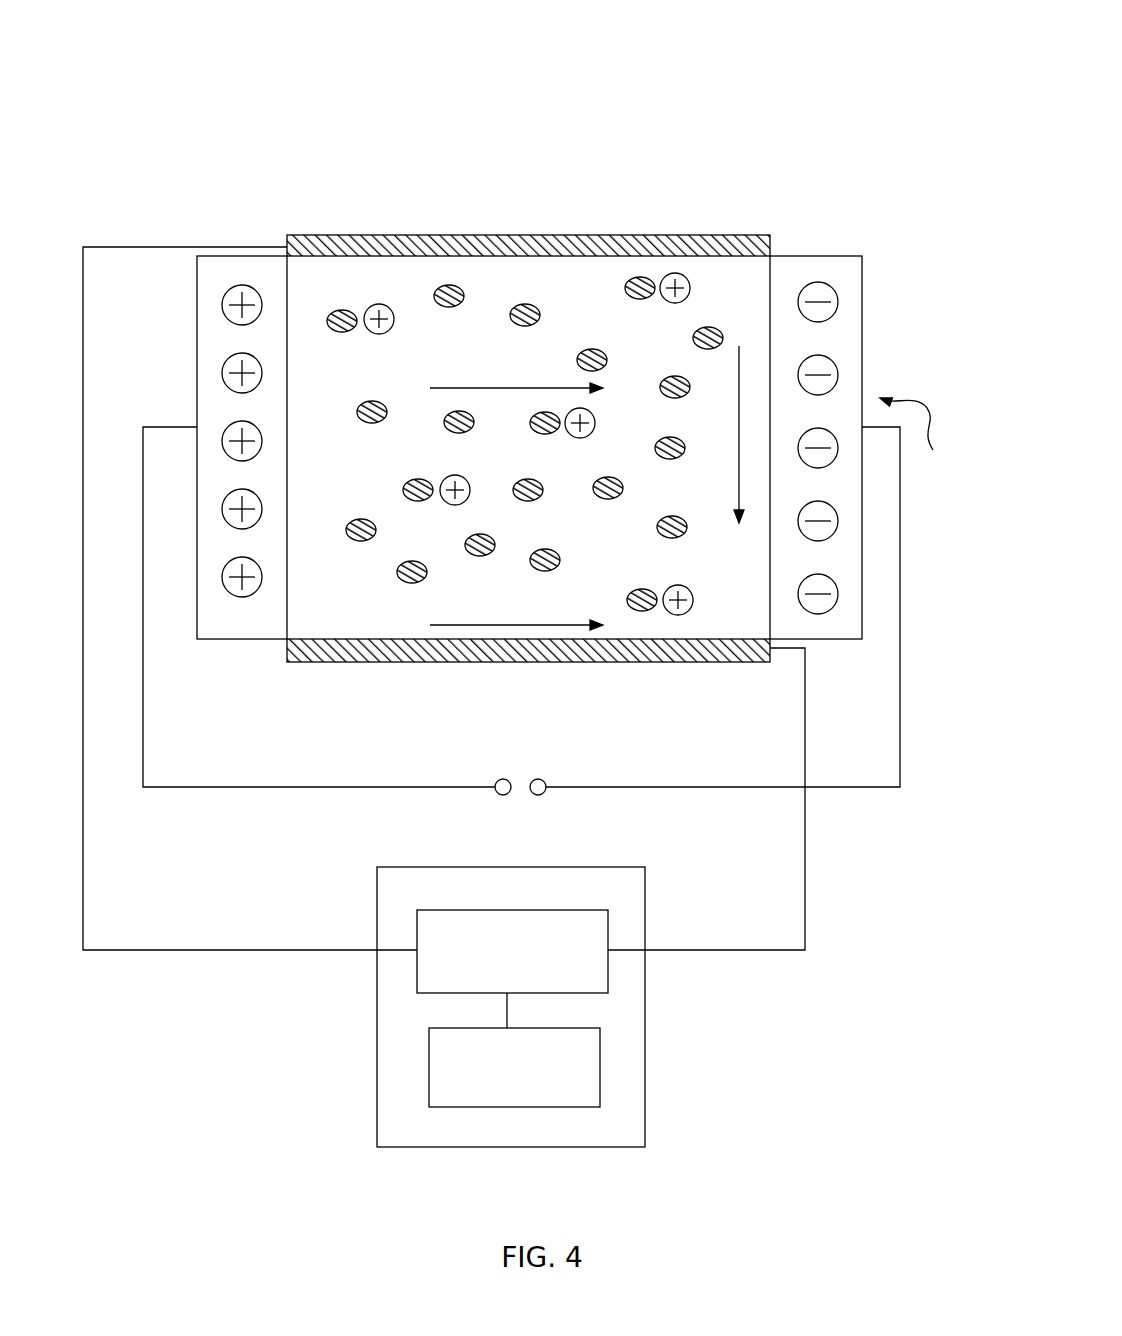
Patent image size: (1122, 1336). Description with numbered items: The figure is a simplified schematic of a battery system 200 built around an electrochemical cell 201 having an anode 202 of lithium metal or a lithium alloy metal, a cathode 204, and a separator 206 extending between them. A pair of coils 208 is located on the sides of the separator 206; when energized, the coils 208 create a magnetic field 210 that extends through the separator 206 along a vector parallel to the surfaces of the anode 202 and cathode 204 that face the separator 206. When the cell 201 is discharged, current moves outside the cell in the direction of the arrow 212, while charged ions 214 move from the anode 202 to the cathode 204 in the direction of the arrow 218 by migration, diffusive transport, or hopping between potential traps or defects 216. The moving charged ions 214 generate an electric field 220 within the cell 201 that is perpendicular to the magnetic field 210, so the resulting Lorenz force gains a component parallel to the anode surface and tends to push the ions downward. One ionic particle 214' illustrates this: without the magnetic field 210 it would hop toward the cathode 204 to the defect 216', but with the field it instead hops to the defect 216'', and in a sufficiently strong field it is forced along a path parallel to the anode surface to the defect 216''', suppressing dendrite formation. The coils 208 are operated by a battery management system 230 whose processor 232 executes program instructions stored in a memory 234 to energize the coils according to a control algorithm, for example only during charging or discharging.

The battery system 200 is at (782, 49).
The electrochemical cell 201 is at (578, 165).
The anode 202 is at (231, 256).
The cathode 204 is at (816, 256).
The separator 206 is at (460, 235).
The coils 208 is at (735, 236).
The magnetic field 210 is at (739, 357).
The arrow 212 is at (924, 405).
The charged ions 214 is at (523, 260).
The ionic particle 214' is at (293, 433).
The defects 216 is at (523, 250).
The defect 216' is at (485, 590).
The defect 216'' is at (362, 632).
The defect 216''' is at (348, 618).
The arrow 218 is at (540, 627).
The electric field 220 is at (455, 388).
The battery management system 230 is at (530, 845).
The processor 232 is at (418, 985).
The memory 234 is at (430, 1088).